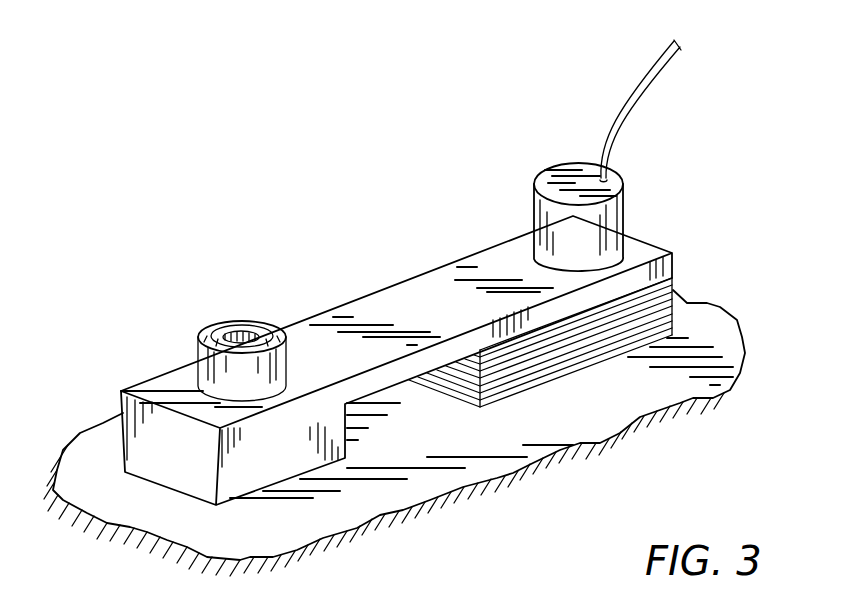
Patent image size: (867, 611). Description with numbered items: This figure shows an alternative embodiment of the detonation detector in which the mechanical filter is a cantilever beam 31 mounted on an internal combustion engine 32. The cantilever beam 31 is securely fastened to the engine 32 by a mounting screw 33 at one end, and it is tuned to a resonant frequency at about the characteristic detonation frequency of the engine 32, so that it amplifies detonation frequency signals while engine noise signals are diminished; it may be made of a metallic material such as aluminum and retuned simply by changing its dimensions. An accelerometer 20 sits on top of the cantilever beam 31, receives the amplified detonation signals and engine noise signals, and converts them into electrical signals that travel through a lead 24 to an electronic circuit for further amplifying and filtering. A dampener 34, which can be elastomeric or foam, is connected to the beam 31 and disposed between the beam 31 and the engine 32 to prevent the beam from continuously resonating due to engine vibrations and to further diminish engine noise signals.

The accelerometer 20 is at (623, 183).
The lead 24 is at (651, 86).
The cantilever beam 31 is at (378, 293).
The internal combustion engine 32 is at (90, 450).
The mounting screw 33 is at (216, 320).
The dampener 34 is at (718, 308).